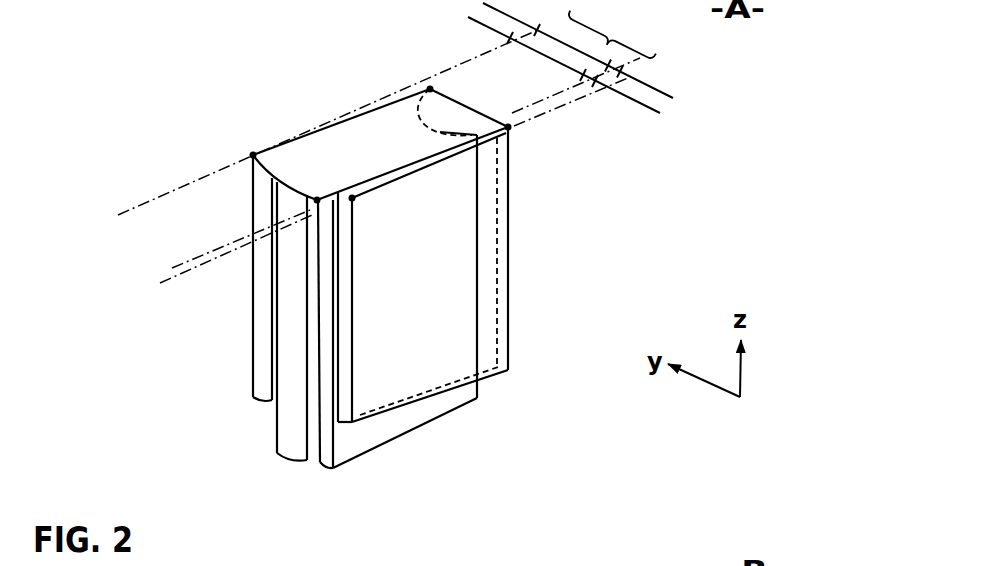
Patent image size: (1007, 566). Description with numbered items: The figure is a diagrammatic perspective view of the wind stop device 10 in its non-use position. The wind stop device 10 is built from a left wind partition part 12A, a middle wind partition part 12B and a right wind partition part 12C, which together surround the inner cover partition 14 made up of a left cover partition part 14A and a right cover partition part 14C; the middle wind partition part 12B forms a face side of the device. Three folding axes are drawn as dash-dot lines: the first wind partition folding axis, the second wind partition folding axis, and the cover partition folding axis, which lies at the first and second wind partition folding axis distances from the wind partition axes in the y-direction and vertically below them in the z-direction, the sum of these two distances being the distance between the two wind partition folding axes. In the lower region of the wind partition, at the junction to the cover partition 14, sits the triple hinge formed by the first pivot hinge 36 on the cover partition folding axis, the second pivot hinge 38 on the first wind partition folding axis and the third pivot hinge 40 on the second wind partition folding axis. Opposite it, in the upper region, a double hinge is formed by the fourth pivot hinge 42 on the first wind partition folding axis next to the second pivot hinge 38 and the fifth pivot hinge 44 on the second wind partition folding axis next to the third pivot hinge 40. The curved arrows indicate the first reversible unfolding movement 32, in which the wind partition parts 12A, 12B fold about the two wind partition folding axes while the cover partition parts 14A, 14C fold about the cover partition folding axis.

The wind stop device 10 is at (175, 158).
The left wind partition part 12A is at (263, 369).
The middle wind partition part 12B is at (335, 142).
The right wind partition part 12C is at (506, 210).
The cover partition 14 is at (200, 458).
The left cover partition part 14A is at (293, 447).
The right cover partition part 14C is at (325, 458).
The first reversible unfolding movement 32 is at (263, 432).
The first pivot hinge 36 is at (308, 209).
The second pivot hinge 38 is at (251, 149).
The third pivot hinge 40 is at (361, 203).
The fourth pivot hinge 42 is at (436, 75).
The fifth pivot hinge 44 is at (515, 130).